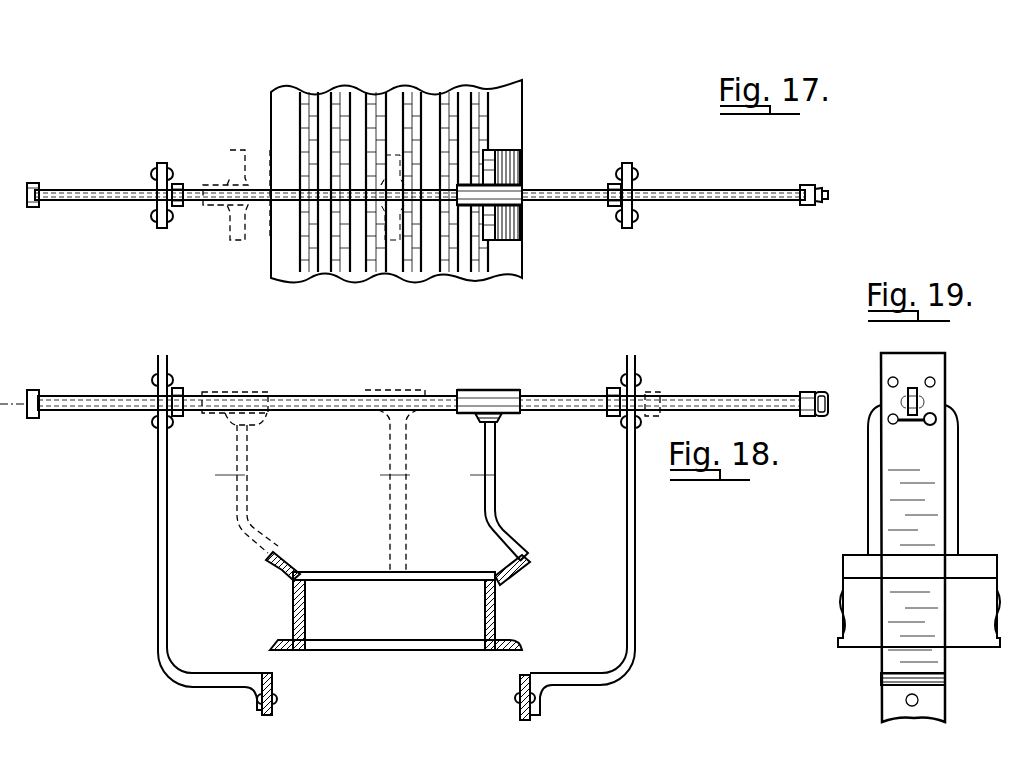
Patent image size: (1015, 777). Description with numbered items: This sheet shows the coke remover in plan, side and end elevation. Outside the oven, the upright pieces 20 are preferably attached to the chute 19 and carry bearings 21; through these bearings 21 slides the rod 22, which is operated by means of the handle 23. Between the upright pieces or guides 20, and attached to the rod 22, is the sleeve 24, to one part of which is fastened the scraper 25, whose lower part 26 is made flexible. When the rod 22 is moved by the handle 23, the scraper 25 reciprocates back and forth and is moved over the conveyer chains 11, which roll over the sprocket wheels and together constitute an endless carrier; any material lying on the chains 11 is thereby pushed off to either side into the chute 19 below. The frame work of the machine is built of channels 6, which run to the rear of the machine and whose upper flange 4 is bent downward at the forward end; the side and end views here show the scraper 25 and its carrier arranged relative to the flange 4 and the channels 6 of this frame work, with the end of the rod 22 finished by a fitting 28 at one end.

In FIG. 17, the upper flange 4 is at (394, 164).
In FIG. 18, the upper flange 4 is at (285, 566).
In FIG. 19, the upper flange 4 is at (858, 568).
In FIG. 18, the channels 6 is at (290, 606).
In FIG. 19, the channels 6 is at (858, 606).
In FIG. 17, the chain 11 is at (373, 92).
In FIG. 18, the chain 11 is at (366, 580).
In FIG. 18, the chute 19 is at (273, 681).
In FIG. 17, the upright pieces 20 is at (162, 176).
In FIG. 18, the upright pieces 20 is at (160, 506).
In FIG. 19, the upright pieces 20 is at (928, 492).
In FIG. 17, the bearings 21 is at (179, 185).
In FIG. 18, the bearings 21 is at (180, 388).
In FIG. 17, the rod 22 is at (714, 202).
In FIG. 18, the rod 22 is at (682, 398).
In FIG. 17, the handle 23 is at (806, 206).
In FIG. 18, the handle 23 is at (820, 390).
In FIG. 19, the handle 23 is at (920, 397).
In FIG. 17, the sleeve 24 is at (515, 196).
In FIG. 18, the sleeve 24 is at (478, 392).
In FIG. 17, the scraper 25 is at (492, 162).
In FIG. 18, the scraper 25 is at (493, 446).
In FIG. 18, the flexible lower part 26 is at (505, 530).
In FIG. 17, the nut 28 is at (31, 207).
In FIG. 18, the nut 28 is at (24, 400).